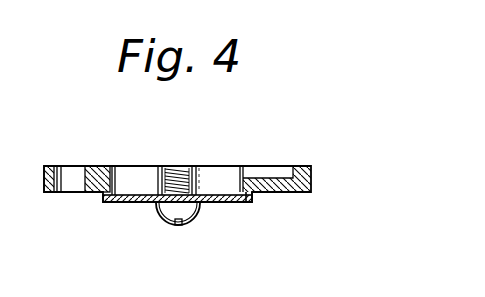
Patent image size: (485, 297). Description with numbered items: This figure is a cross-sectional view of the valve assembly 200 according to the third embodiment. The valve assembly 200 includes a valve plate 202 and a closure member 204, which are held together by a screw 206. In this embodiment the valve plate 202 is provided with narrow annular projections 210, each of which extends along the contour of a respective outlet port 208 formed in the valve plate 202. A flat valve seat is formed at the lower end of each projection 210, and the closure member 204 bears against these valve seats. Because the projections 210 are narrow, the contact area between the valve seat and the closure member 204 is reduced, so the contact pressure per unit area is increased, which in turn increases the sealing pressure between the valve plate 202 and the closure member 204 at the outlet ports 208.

The valve assembly 200 is at (321, 180).
The valve plate 202 is at (101, 165).
The closure member 204 is at (216, 204).
The screw 206 is at (169, 220).
The outlet ports 208 is at (220, 165).
The annular projections 210 is at (310, 225).